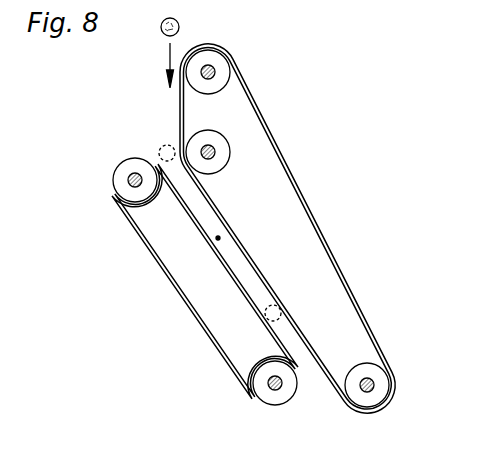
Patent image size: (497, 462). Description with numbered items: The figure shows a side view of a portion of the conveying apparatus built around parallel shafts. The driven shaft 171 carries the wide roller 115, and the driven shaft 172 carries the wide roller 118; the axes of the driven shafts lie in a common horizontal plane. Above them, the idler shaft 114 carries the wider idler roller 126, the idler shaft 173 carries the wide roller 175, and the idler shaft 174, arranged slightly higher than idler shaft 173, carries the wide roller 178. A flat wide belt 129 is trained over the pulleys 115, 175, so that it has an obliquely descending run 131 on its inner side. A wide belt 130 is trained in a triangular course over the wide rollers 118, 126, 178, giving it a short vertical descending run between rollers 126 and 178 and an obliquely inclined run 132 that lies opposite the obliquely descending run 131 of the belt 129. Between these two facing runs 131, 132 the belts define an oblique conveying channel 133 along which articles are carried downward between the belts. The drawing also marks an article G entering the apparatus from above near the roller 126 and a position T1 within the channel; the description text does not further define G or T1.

The idler shaft 114 is at (216, 71).
The wide roller 115 is at (253, 392).
The wide roller 118 is at (381, 377).
The wider idler roller 126 is at (218, 61).
The flat wide belt 129 is at (210, 348).
The wide belt 130 is at (324, 226).
The obliquely descending run 131 is at (229, 268).
The obliquely inclined run 132 is at (265, 284).
The oblique conveying channel 133 is at (218, 238).
The driven shaft 171 is at (273, 389).
The driven shaft 172 is at (372, 390).
The idler shaft 173 is at (125, 201).
The idler shaft 174 is at (217, 158).
The wide roller 175 is at (128, 183).
The wide roller 178 is at (222, 143).
The article (glass/object) being conveyed G is at (179, 18).
The transfer point T1 is at (281, 308).